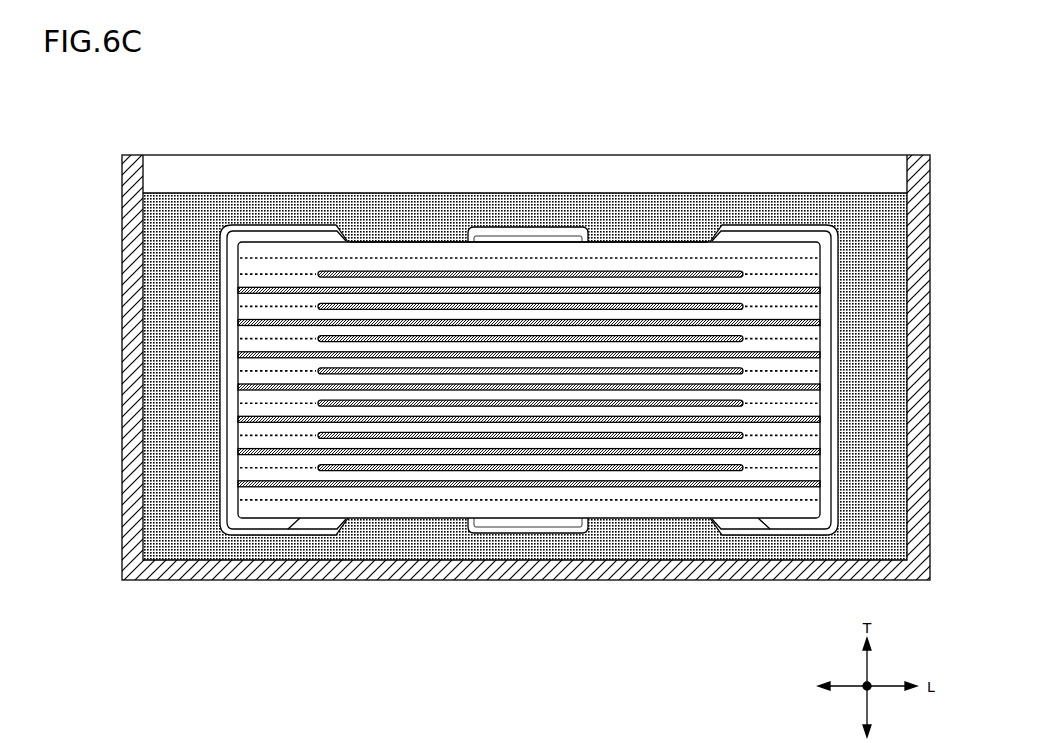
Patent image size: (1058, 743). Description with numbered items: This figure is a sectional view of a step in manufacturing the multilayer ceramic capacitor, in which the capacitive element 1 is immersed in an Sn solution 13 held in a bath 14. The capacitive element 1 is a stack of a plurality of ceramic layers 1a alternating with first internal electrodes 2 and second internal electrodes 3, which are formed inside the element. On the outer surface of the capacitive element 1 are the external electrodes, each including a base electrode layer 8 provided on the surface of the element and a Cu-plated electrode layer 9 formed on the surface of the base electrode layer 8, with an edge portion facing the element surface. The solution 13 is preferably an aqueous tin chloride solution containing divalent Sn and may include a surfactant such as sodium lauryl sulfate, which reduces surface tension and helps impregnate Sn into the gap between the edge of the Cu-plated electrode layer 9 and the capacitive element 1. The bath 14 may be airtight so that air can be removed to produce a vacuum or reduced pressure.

The capacitive element 1 is at (196, 278).
The ceramic layer 1a is at (676, 253).
The internal electrode 2 is at (385, 286).
The internal electrode 3 is at (430, 272).
The base electrode layer 8 is at (262, 237).
The Cu-plated electrode layer 9 is at (290, 240).
The Sn solution 13 is at (858, 228).
The bath 14 is at (920, 172).